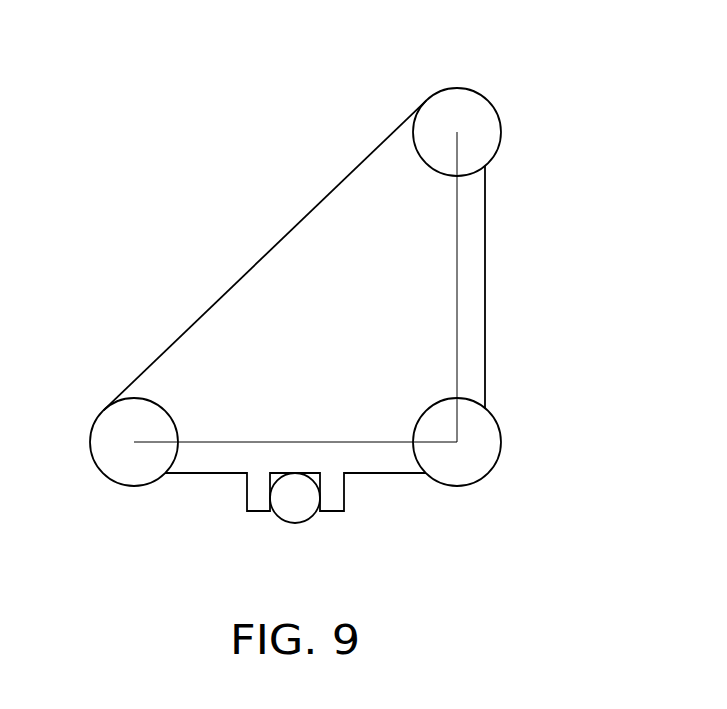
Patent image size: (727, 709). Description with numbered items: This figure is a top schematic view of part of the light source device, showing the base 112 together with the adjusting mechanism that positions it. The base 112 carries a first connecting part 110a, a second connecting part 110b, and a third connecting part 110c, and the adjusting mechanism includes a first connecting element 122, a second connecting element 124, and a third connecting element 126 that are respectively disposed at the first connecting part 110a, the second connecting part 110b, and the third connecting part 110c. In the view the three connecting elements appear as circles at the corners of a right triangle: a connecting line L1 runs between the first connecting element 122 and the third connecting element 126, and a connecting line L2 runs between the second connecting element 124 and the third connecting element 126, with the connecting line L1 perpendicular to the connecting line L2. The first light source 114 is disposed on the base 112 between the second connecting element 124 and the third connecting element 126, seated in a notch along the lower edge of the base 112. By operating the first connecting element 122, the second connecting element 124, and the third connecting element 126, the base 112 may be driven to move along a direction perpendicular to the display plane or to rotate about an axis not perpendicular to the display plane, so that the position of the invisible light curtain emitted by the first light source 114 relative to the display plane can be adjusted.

The base 112 is at (298, 255).
The first light source 114 is at (293, 508).
The first connecting element 122 is at (478, 115).
The second connecting element 124 is at (128, 465).
The third connecting element 126 is at (457, 472).
The first connecting part 110a is at (437, 101).
The second connecting part 110b is at (112, 444).
The third connecting part 110c is at (511, 483).
The connecting line L1 is at (457, 292).
The connecting line L2 is at (218, 442).